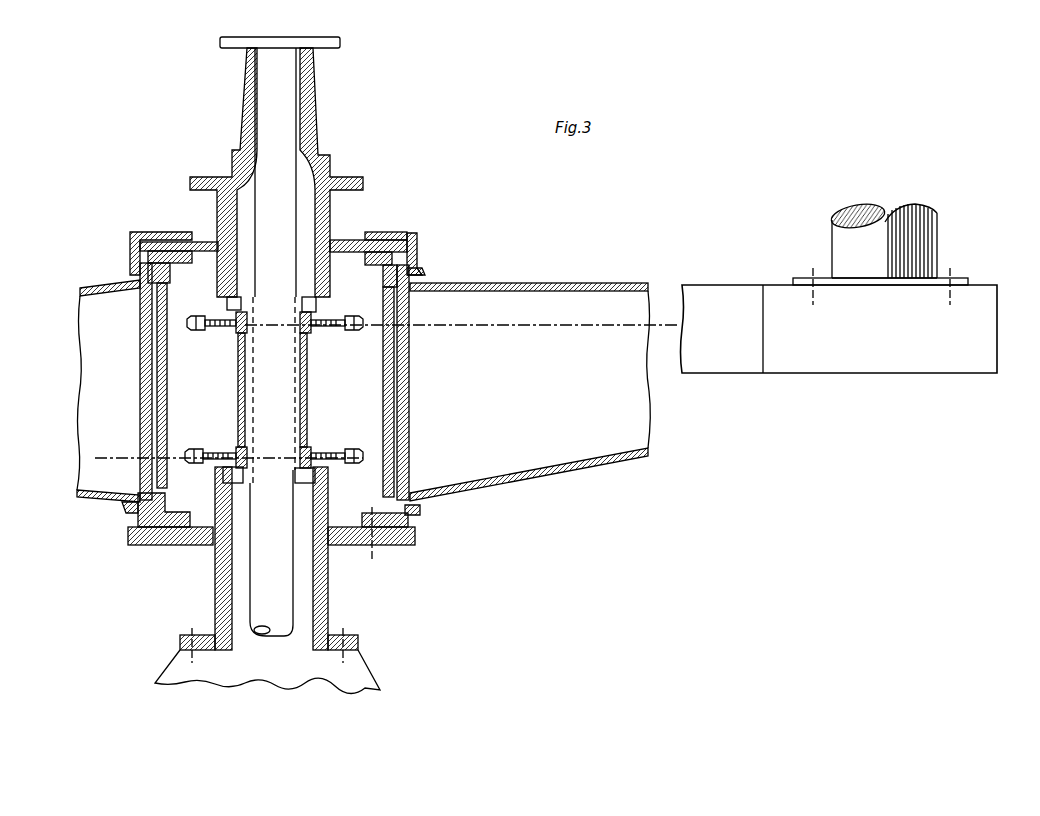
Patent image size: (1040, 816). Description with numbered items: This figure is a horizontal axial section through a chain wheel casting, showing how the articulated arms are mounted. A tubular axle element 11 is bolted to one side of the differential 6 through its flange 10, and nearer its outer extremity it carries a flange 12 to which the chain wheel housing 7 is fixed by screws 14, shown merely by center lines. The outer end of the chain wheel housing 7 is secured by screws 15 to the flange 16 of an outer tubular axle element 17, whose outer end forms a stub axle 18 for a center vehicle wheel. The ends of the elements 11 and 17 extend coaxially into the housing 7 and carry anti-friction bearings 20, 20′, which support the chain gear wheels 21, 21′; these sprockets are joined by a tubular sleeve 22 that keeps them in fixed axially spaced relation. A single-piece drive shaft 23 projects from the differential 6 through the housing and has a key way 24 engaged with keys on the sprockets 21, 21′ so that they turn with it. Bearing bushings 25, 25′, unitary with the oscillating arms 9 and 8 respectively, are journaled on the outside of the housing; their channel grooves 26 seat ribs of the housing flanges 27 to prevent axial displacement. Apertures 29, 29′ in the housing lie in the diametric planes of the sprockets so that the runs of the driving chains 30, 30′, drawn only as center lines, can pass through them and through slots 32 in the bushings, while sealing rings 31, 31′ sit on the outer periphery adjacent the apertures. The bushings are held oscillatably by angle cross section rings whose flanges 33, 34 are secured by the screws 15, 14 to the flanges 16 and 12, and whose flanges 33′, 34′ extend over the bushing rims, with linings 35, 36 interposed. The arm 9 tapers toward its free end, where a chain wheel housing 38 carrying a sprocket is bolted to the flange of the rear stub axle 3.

The rear stub axle 3 is at (890, 270).
The differential 6 is at (362, 664).
The chain wheel housing 7 is at (172, 394).
The front oscillating arm 8 is at (103, 498).
The rear oscillating arm 9 is at (606, 456).
The flange 10 is at (352, 636).
The tubular axle element 11 is at (330, 590).
The flange 12 is at (198, 547).
The screws 14 is at (177, 547).
The screws 15 is at (182, 241).
The flange 16 is at (338, 240).
The outer tubular axle element 17 is at (237, 214).
The stub axle 18 is at (318, 102).
The anti-friction bearing 20 is at (241, 300).
The anti-friction bearing 20′ is at (241, 480).
The chain gear wheel 21 is at (226, 327).
The chain gear wheel 21′ is at (215, 452).
The tubular sleeve 22 is at (308, 393).
The drive shaft 23 is at (282, 591).
The key way 24 is at (308, 350).
The bearing bushing 25 is at (407, 393).
The bearing bushing 25′ is at (148, 389).
The channel grooves 26 is at (420, 262).
The flanges 27 is at (412, 242).
The aperture 29 is at (347, 312).
The aperture 29′ is at (176, 452).
The driving chain 30 is at (487, 325).
The driving chain 30′ is at (107, 454).
The sealing ring 31 is at (152, 302).
The sealing ring 31′ is at (400, 480).
The slots 32 is at (143, 468).
The ring flange 33 is at (387, 236).
The ring flange 33′ is at (418, 246).
The ring flange 34 is at (147, 543).
The ring flange 34′ is at (130, 523).
The lining 35 is at (131, 246).
The lining 36 is at (415, 527).
The chain wheel housing 38 is at (892, 355).